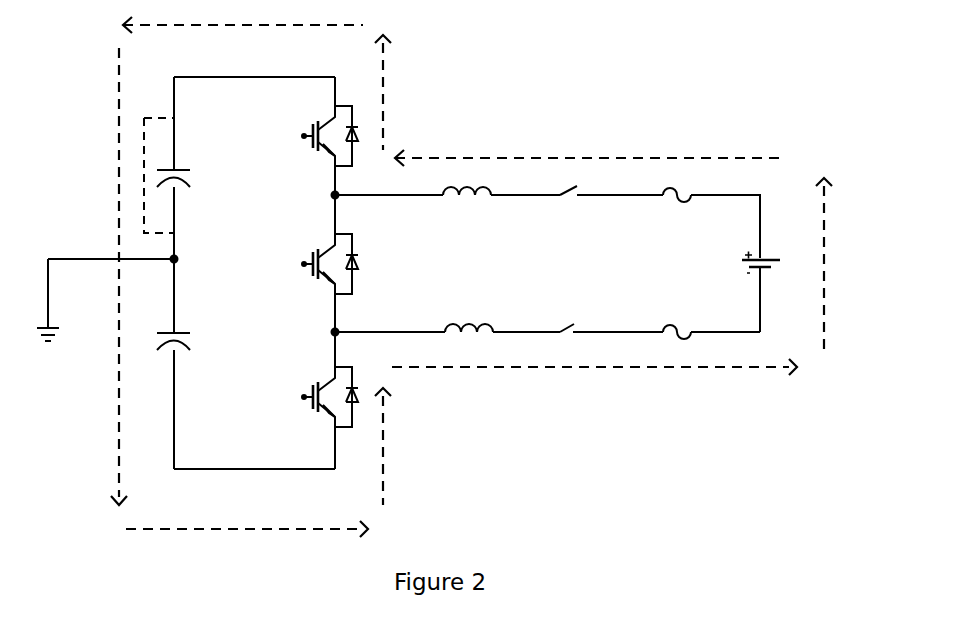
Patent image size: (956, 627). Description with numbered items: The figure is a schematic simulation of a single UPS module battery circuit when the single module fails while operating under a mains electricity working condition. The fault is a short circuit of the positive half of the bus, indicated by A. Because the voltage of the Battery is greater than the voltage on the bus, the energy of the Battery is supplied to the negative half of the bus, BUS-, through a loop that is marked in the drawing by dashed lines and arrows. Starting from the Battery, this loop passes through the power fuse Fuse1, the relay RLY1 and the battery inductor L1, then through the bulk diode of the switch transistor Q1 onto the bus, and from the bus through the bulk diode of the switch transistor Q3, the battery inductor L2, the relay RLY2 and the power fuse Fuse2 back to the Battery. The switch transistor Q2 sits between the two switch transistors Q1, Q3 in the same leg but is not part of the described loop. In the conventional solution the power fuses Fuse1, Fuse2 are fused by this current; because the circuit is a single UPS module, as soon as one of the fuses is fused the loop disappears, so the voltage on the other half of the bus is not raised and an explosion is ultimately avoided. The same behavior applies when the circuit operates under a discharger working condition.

The negative DC bus BUS- is at (240, 486).
The short circuit of positive half of the bus A is at (160, 175).
The switch transistor Q1 is at (306, 136).
The second IGBT switch Q2 is at (306, 264).
The switch transistor Q3 is at (306, 397).
The battery inductor L1 is at (467, 184).
The battery inductor L2 is at (469, 319).
The relay RLY1 is at (604, 184).
The relay RLY2 is at (605, 319).
The power fuse Fuse1 is at (678, 186).
The power fuse Fuse2 is at (678, 323).
The battery Battery is at (730, 292).